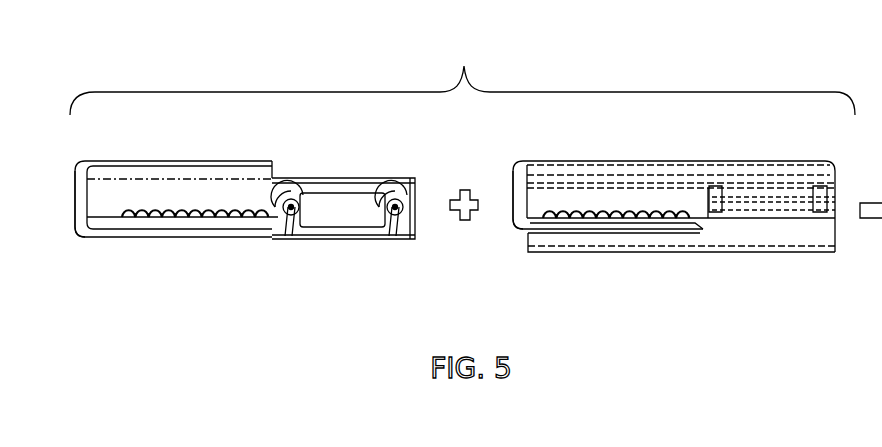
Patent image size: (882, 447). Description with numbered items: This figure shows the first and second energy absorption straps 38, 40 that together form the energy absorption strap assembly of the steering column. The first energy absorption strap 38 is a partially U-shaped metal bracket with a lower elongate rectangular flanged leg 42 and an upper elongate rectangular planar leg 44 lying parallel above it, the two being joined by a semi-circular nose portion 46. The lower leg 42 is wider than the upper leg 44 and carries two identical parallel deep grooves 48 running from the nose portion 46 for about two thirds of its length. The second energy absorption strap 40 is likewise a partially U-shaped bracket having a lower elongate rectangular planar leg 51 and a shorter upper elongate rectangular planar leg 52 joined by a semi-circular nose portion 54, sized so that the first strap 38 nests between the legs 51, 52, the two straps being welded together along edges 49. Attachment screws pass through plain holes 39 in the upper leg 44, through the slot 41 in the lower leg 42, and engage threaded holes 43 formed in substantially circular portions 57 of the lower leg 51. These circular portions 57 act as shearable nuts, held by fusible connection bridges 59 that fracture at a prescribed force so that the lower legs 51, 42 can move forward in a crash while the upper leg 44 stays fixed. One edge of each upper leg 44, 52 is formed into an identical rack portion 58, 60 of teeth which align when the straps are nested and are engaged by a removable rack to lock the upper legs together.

The first energy absorption strap 38 is at (650, 140).
The plain holes 39 is at (715, 185).
The second energy absorption strap 40 is at (210, 140).
The slot 41 is at (740, 217).
The lower elongate rectangular flanged leg 42 is at (802, 237).
The threaded holes 43 is at (292, 193).
The upper elongate rectangular planar leg 44 is at (561, 198).
The semi-circular nose portion 46 is at (515, 200).
The deep grooves 48 is at (668, 173).
The edges 49 is at (338, 178).
The lower elongate rectangular planar leg 51 is at (243, 233).
The upper elongate rectangular planar leg 52 is at (155, 172).
The semi-circular nose portion 54 is at (83, 200).
The substantially circular portions 57 is at (387, 197).
The rack portion 58 is at (612, 224).
The fusible connection bridges 59 is at (296, 237).
The rack portion 60 is at (156, 217).